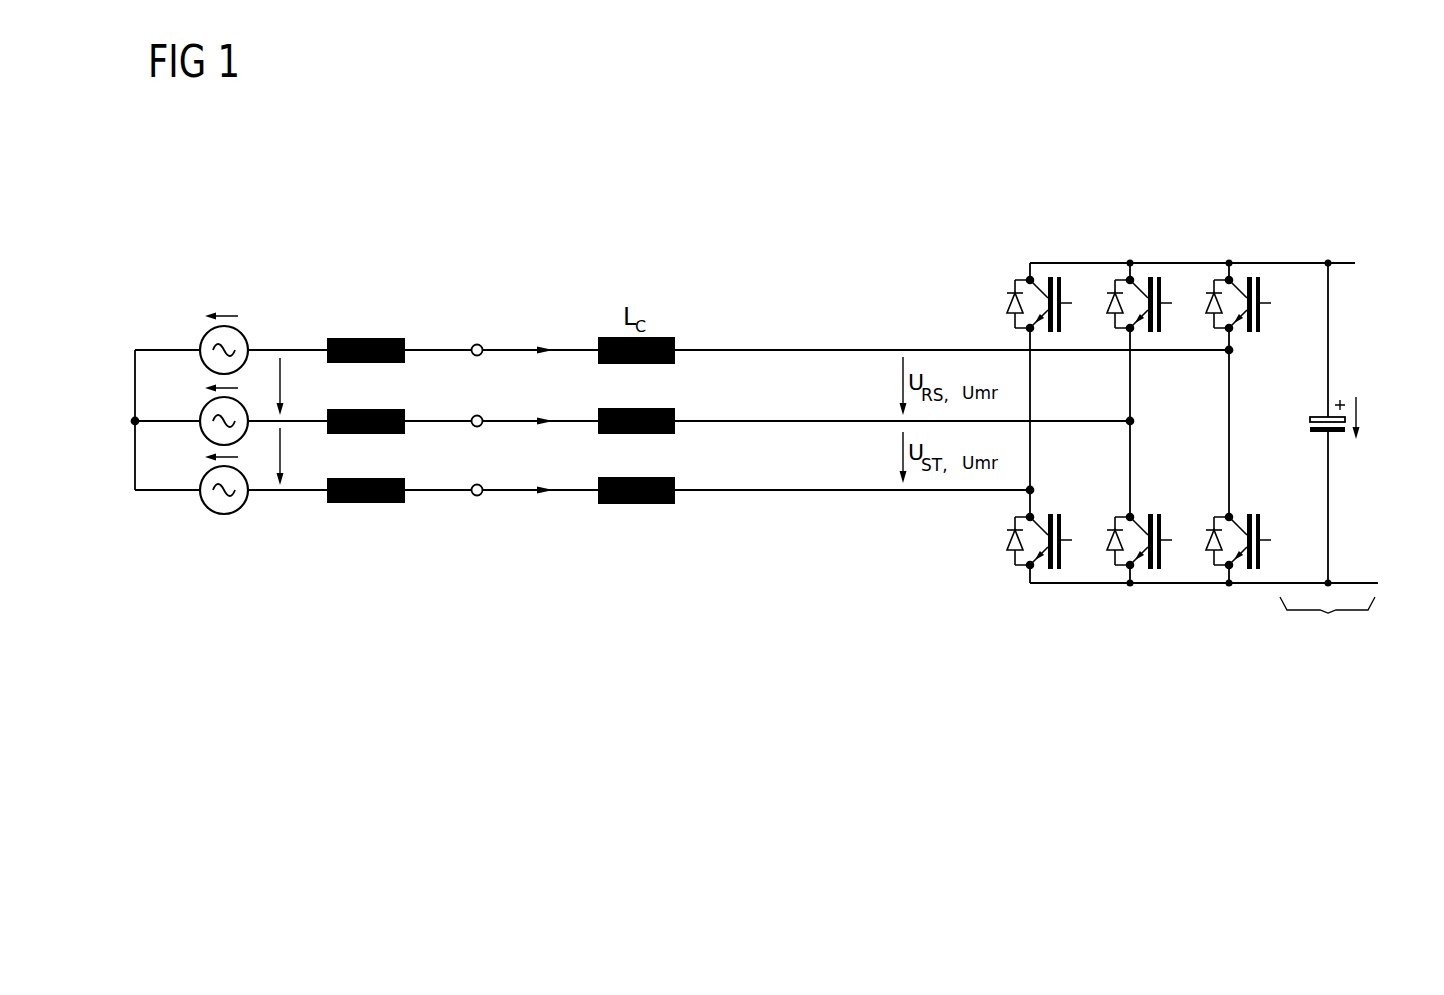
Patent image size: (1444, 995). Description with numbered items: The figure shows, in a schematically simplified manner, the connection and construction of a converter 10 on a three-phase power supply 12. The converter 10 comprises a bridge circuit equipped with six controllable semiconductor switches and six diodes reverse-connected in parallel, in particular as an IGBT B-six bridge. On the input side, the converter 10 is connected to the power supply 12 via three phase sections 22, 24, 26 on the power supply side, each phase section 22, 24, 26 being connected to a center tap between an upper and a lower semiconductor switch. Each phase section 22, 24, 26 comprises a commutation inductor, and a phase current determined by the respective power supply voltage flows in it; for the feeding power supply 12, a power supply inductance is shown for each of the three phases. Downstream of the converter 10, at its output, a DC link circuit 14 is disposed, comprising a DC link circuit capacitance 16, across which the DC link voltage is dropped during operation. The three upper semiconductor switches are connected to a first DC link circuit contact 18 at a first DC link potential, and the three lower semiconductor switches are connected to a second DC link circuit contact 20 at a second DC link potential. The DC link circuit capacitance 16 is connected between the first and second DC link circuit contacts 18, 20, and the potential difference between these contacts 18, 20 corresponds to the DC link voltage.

The converter 10 is at (1037, 612).
The three-phase power supply 12 is at (138, 270).
The DC link circuit 14 is at (1328, 613).
The DC link circuit capacitance 16 is at (1328, 432).
The first DC link circuit contact 18 is at (1328, 263).
The second DC link circuit contact 20 is at (1328, 583).
The phase section 22 is at (738, 350).
The phase section 24 is at (838, 421).
The phase section 26 is at (773, 490).